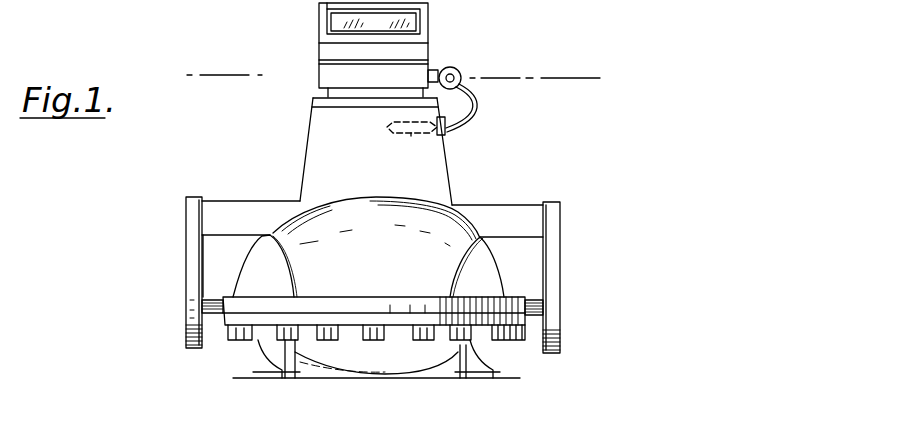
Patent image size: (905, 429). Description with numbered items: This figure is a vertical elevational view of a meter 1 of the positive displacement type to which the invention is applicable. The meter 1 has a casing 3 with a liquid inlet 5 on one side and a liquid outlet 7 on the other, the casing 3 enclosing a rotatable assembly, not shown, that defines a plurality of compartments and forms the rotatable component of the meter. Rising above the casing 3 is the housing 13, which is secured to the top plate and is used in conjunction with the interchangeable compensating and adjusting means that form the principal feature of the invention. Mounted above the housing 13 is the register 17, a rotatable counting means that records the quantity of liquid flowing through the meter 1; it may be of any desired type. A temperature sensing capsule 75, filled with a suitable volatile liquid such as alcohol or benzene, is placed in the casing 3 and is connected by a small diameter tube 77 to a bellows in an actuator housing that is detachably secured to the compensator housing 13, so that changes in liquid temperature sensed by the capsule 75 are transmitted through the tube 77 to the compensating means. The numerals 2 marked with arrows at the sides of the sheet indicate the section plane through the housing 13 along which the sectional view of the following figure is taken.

The meter 1 is at (382, 244).
The section line 2- 2 is at (205, 74).
The casing 3 is at (455, 208).
The liquid inlet 5 is at (186, 237).
The liquid outlet 7 is at (560, 250).
The housing 13 is at (333, 78).
The register 17 is at (335, 48).
The temperature sensing capsule 75 is at (406, 138).
The small diameter tube 77 is at (484, 105).